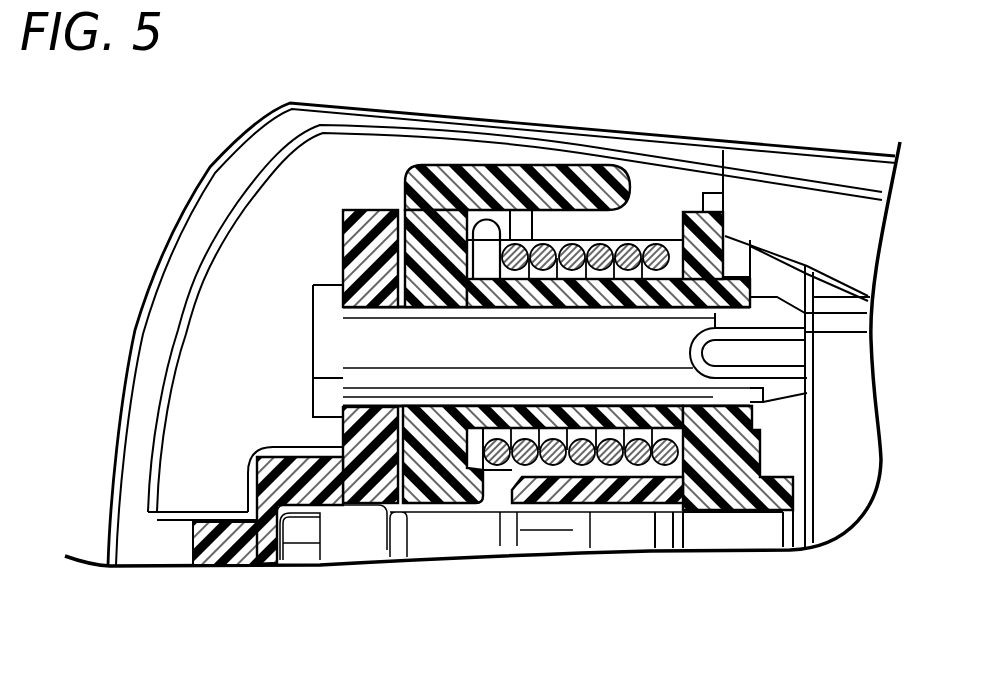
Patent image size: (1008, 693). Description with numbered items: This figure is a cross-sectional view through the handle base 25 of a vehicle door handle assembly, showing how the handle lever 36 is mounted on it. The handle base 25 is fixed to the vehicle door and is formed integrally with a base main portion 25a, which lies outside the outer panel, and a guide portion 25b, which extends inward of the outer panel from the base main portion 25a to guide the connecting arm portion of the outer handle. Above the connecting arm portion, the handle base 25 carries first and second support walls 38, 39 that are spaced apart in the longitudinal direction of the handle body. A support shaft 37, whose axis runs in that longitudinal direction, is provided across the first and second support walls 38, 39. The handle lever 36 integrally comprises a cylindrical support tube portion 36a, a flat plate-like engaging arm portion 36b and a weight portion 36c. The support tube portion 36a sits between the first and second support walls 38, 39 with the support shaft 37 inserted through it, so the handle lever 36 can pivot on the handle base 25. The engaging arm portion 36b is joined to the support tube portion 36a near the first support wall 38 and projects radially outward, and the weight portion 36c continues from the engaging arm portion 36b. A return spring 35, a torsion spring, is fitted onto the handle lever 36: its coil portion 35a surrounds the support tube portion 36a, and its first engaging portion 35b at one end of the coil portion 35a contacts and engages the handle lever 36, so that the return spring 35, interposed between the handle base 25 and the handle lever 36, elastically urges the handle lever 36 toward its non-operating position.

The handle base 25 is at (588, 119).
The base main portion 25a is at (807, 197).
The guide portion 25b is at (230, 557).
The return spring 35 is at (631, 232).
The coil portion 35a is at (598, 268).
The first engaging portion 35b is at (488, 222).
The handle lever 36 is at (455, 158).
The support tube portion 36a is at (660, 465).
The engaging arm portion 36b is at (467, 503).
The weight portion 36c is at (539, 174).
The support shaft 37 is at (580, 505).
The first support wall 38 is at (390, 210).
The second support wall 39 is at (694, 210).